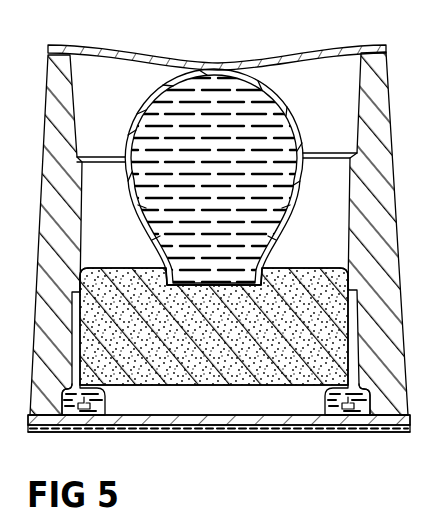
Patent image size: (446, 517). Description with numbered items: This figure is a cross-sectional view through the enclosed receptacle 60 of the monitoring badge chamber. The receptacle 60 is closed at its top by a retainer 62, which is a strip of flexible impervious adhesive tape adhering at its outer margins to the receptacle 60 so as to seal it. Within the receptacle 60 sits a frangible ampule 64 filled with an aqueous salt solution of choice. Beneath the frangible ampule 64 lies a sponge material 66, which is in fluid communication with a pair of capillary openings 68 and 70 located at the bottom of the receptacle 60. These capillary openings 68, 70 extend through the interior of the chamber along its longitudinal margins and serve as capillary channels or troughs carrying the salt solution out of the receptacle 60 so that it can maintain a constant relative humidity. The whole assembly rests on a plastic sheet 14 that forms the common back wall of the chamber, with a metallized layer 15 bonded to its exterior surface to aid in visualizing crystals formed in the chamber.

The enclosed receptacle 60 is at (380, 83).
The retainer 62 is at (340, 46).
The frangible ampule 64 is at (152, 100).
The sponge material 66 is at (327, 270).
The capillary opening 68 is at (92, 406).
The capillary opening 70 is at (361, 412).
The plastic sheet 14 is at (241, 421).
The metallized layer 15 is at (190, 426).